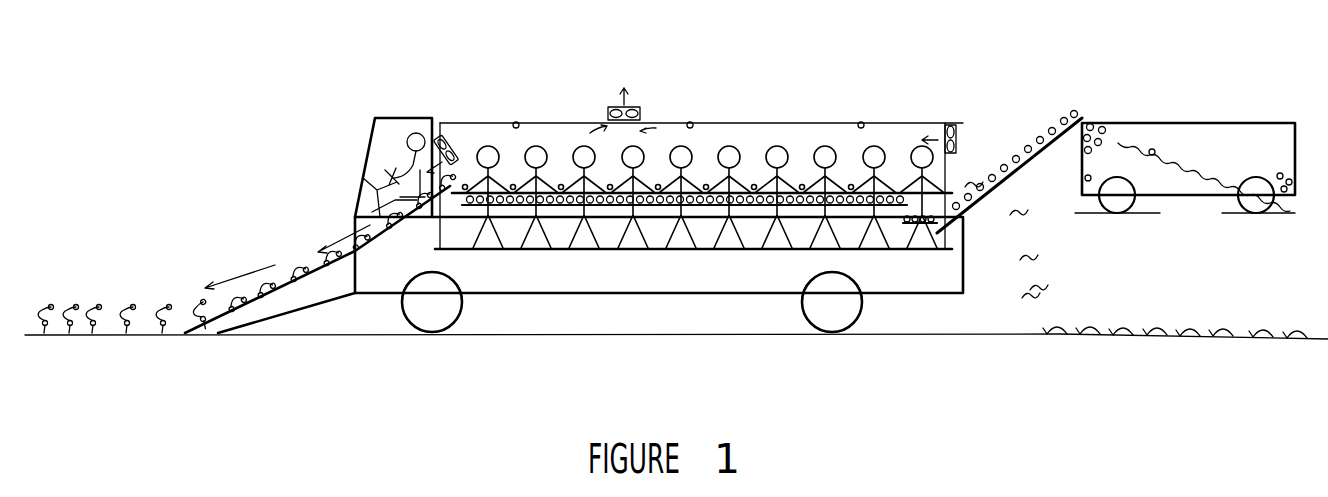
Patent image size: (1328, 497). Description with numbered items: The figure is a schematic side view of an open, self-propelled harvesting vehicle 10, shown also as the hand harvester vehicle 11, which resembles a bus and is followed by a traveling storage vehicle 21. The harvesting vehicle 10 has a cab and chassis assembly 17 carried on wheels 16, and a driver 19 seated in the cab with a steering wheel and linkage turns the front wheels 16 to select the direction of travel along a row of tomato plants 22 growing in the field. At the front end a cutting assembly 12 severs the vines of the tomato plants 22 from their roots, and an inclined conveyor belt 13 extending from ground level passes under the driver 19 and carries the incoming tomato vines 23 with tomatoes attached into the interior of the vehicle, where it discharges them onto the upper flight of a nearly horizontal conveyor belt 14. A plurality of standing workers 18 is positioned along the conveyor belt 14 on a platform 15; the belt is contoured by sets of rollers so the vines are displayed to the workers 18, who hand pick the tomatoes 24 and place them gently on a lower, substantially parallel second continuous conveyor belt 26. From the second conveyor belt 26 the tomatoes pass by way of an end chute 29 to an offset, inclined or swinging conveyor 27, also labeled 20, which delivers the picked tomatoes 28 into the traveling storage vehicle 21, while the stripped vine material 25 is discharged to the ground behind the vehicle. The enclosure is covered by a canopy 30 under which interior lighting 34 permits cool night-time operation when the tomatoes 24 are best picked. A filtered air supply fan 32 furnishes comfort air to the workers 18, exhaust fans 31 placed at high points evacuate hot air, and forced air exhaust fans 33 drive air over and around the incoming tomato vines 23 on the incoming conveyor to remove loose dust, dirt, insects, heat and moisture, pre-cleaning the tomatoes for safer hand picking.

The harvesting vehicle 10 is at (678, 56).
The hand harvester vehicle 11 is at (353, 230).
The cutting assembly 12 is at (203, 308).
The inclined conveyor belt 13 is at (257, 287).
The conveyor belt 14 is at (465, 190).
The worker platform 15 is at (510, 250).
The wheels 16 is at (402, 325).
The cab and chassis assembly 17 is at (375, 118).
The workers 18 is at (740, 178).
The driver 19 is at (416, 133).
The discharge conveyor 20 is at (1052, 138).
The traveling storage vehicle 21 is at (1120, 123).
The tomato plants 22 is at (100, 305).
The incoming tomato vines 23 is at (305, 252).
The tomatoes 24 is at (790, 190).
The discarded plant material 25 is at (1067, 322).
The second continuous conveyor belt 26 is at (802, 204).
The offset, inclined or swinging conveyor 27 is at (1000, 165).
The picked tomatoes 28 is at (1160, 152).
The collection tray 29 is at (896, 196).
The canopy 30 is at (560, 123).
The exhaust fans 31 is at (447, 136).
The filtered air supply fan 32 is at (951, 124).
The forced air exhaust fans 33 is at (640, 108).
The lighting 34 is at (516, 122).